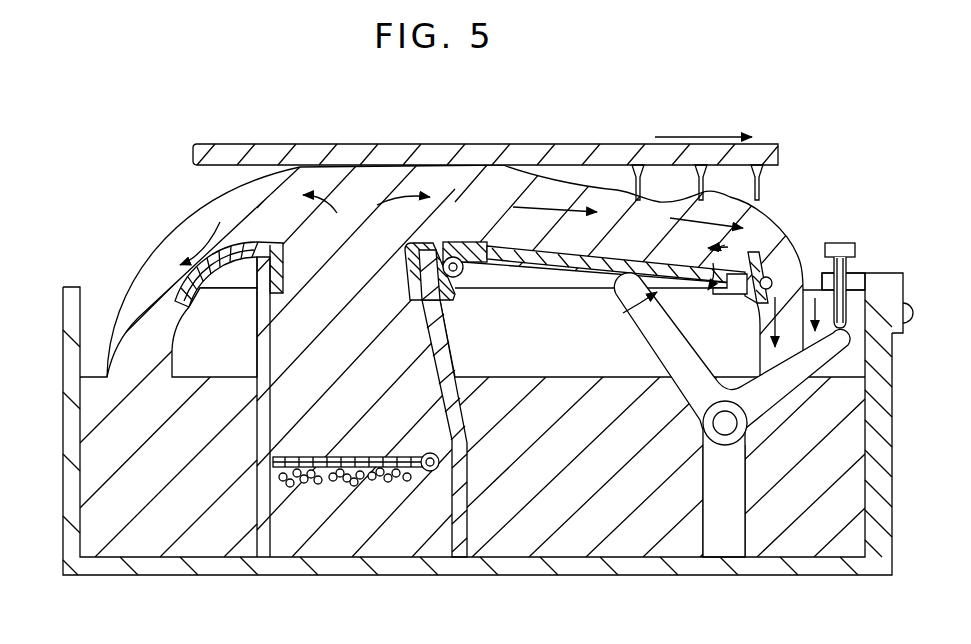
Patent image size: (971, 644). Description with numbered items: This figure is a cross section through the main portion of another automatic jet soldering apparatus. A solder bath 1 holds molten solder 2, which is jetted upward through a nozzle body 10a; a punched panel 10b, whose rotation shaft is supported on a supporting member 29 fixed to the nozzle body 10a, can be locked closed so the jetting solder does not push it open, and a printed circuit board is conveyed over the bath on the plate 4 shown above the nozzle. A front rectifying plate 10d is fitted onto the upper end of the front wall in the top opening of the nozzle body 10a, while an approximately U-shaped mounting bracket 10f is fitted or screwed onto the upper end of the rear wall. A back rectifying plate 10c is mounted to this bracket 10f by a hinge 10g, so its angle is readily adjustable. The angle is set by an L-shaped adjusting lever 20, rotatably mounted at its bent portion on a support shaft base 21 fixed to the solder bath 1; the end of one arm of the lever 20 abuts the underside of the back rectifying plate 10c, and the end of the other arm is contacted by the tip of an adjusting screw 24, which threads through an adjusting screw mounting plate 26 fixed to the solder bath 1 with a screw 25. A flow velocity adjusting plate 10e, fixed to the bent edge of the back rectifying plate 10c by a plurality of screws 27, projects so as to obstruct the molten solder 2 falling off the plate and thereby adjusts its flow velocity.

The solder bath 1 is at (878, 463).
The molten solder 2 is at (587, 537).
The conveyor plate 4 is at (533, 155).
The nozzle body 10a is at (428, 300).
The punched panel 10b is at (313, 468).
The back rectifying plate 10c is at (655, 257).
The front rectifying plate 10d is at (217, 262).
The flow velocity adjusting plate 10e is at (757, 252).
The back rectifying plate mounting bracket 10f is at (418, 243).
The hinge 10g is at (459, 258).
The adjusting lever 20 is at (815, 354).
The support shaft base 21 is at (723, 543).
The adjusting screw 24 is at (841, 246).
The screw 25 is at (915, 312).
The adjusting screw mounting plate 26 is at (896, 280).
The screws 27 is at (822, 275).
The supporting member 29 is at (280, 475).